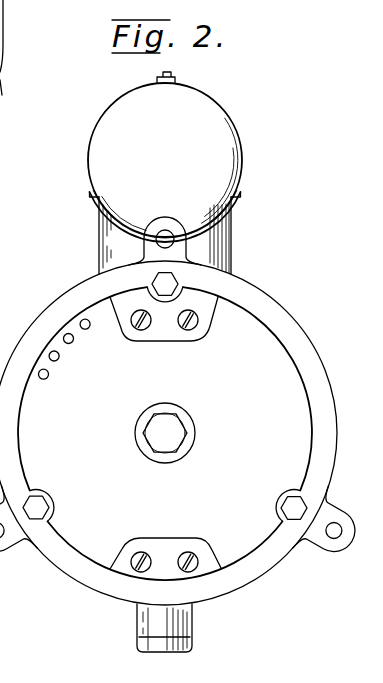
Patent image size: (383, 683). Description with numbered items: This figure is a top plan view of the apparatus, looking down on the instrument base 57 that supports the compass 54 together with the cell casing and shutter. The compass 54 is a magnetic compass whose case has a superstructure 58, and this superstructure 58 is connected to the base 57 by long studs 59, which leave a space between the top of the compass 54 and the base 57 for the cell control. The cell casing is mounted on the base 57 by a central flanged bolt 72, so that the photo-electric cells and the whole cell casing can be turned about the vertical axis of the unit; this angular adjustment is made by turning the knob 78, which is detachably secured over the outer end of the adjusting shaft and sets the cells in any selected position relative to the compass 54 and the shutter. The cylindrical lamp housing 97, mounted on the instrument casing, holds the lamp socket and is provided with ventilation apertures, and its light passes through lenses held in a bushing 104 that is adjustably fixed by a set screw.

The compass 54 is at (0, 93).
The base 57 is at (312, 375).
The superstructure 58 is at (7, 12).
The long studs 59 is at (164, 288).
The central flanged bolt 72 is at (168, 429).
The knob 78 is at (147, 627).
The lamp housing 97 is at (217, 121).
The bushing 104 is at (222, 252).